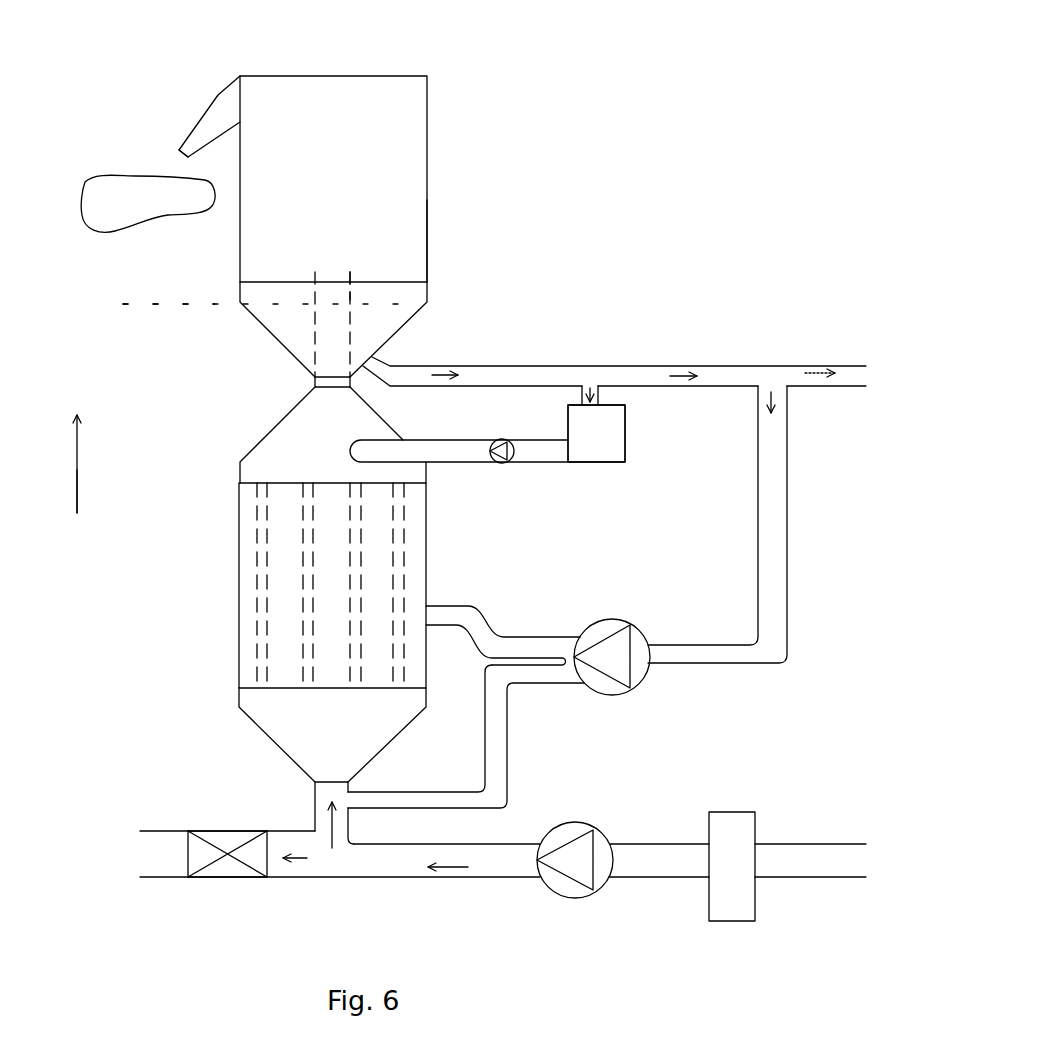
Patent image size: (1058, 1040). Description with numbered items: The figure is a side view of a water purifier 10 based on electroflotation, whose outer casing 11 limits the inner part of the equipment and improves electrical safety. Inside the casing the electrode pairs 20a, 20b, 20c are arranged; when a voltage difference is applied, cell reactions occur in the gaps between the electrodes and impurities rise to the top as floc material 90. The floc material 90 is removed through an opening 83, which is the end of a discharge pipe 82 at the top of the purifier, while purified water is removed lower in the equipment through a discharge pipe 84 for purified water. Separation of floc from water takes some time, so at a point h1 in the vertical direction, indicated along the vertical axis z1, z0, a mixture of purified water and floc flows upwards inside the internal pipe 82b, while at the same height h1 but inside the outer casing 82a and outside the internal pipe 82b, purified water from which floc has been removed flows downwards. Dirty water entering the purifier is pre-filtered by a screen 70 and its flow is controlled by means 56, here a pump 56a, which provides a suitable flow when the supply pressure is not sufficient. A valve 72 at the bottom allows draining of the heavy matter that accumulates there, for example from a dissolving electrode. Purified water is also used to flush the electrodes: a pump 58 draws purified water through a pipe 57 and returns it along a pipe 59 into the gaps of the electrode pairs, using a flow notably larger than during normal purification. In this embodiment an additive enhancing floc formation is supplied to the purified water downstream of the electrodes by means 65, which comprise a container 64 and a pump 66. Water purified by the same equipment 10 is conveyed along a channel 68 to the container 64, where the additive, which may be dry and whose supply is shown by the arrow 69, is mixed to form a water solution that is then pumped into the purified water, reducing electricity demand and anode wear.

The water purifier 10 is at (230, 385).
The outer casing 11 is at (239, 595).
The electrode pair 20a is at (257, 510).
The electrode pair 20b is at (303, 598).
The electrode pair 20c is at (350, 607).
The means for controlling the flow of water for purification 56 is at (613, 905).
The pump 56a is at (573, 898).
The pipe 57 is at (479, 605).
The pump 58 is at (645, 677).
The pipe 59 is at (507, 738).
The container 64 is at (613, 453).
The means for supplying an additive 65 is at (487, 417).
The pump 66 is at (512, 455).
The channel 68 is at (598, 395).
The arrow 69 is at (687, 422).
The screen 70 is at (728, 921).
The valve 72 is at (197, 862).
The discharge pipe 82 is at (220, 97).
The outer casing 82a is at (427, 267).
The internal pipe 82b is at (350, 287).
The opening 83 is at (162, 147).
The discharge pipe for purified water 84 is at (435, 363).
The floc material 90 is at (131, 213).
The point in the vertical direction h1 is at (162, 305).
The vertical direction z1 is at (63, 450).
The vertical direction z0 is at (63, 486).